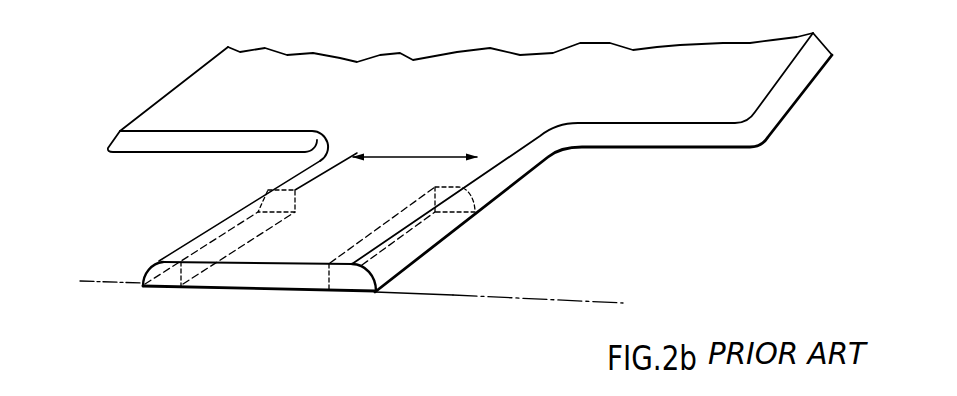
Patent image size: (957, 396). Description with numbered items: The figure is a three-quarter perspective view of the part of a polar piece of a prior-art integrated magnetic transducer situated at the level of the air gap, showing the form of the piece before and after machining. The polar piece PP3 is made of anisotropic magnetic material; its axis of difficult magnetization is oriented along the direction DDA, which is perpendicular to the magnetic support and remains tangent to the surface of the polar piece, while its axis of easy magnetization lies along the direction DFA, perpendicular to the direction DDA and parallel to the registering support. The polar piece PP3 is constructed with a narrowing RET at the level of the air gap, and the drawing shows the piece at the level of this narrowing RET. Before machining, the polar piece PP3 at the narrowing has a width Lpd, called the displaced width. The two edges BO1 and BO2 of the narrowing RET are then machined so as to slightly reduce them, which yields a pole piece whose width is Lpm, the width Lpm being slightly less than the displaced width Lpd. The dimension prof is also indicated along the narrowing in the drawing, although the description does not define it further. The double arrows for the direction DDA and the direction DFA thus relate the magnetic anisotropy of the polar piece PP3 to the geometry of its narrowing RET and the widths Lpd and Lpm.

The polar piece PP3 is at (643, 48).
The narrowing RET is at (202, 226).
The first edge of the narrowing BO1 is at (278, 190).
The second edge of the narrowing BO2 is at (498, 194).
The direction of difficult magnetization DDA is at (508, 90).
The direction of easy magnetization DFA is at (658, 93).
The depth of the fold prof is at (620, 153).
The machined width Lpm is at (148, 307).
The displaced width Lpd is at (312, 338).